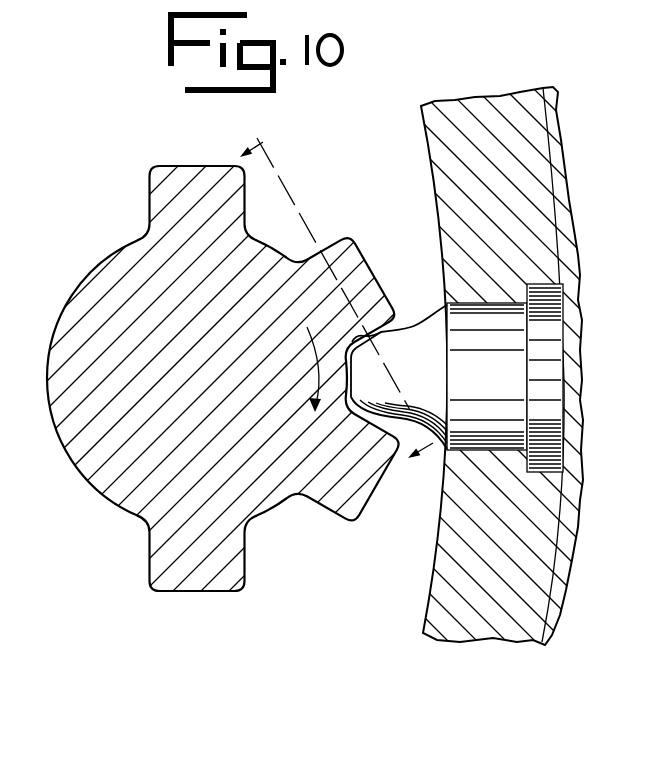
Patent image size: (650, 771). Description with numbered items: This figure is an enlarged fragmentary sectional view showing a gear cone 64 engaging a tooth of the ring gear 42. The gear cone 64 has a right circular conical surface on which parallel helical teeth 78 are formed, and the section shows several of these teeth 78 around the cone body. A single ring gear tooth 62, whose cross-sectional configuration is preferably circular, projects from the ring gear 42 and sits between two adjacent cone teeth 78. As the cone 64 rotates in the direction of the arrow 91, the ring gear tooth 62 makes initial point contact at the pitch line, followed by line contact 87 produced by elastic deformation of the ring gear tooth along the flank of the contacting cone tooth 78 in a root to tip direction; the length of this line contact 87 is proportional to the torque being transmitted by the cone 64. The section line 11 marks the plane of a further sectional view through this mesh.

The section line 11- 11 is at (332, 306).
The ring gear 42 is at (420, 609).
The ring gear tooth 62 is at (412, 328).
The gear cone 64 is at (96, 492).
The helical teeth 78 is at (348, 238).
The line contact 87 is at (392, 333).
The arrow 91 is at (315, 382).